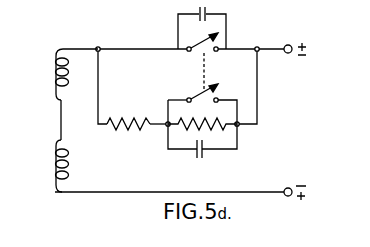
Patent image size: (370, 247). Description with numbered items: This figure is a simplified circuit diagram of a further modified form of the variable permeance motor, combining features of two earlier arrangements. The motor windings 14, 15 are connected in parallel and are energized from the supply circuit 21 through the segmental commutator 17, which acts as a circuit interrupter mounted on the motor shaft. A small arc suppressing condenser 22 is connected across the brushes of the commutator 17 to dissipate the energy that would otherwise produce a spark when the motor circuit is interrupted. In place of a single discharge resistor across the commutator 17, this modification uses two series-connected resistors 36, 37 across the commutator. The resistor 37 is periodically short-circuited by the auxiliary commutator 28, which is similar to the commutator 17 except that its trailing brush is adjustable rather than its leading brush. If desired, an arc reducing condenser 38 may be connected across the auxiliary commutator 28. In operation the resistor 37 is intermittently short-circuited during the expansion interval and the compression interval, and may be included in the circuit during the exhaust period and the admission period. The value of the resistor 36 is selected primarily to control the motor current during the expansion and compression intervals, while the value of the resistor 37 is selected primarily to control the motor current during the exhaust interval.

The winding 14 is at (56, 78).
The winding 15 is at (56, 166).
The segmental commutator 17 is at (201, 44).
The supply circuit 21 is at (268, 52).
The arc suppressing condenser 22 is at (198, 12).
The auxiliary commutator 28 is at (199, 96).
The resistor 36 is at (128, 125).
The resistor 37 is at (204, 124).
The arc reducing condenser 38 is at (201, 157).